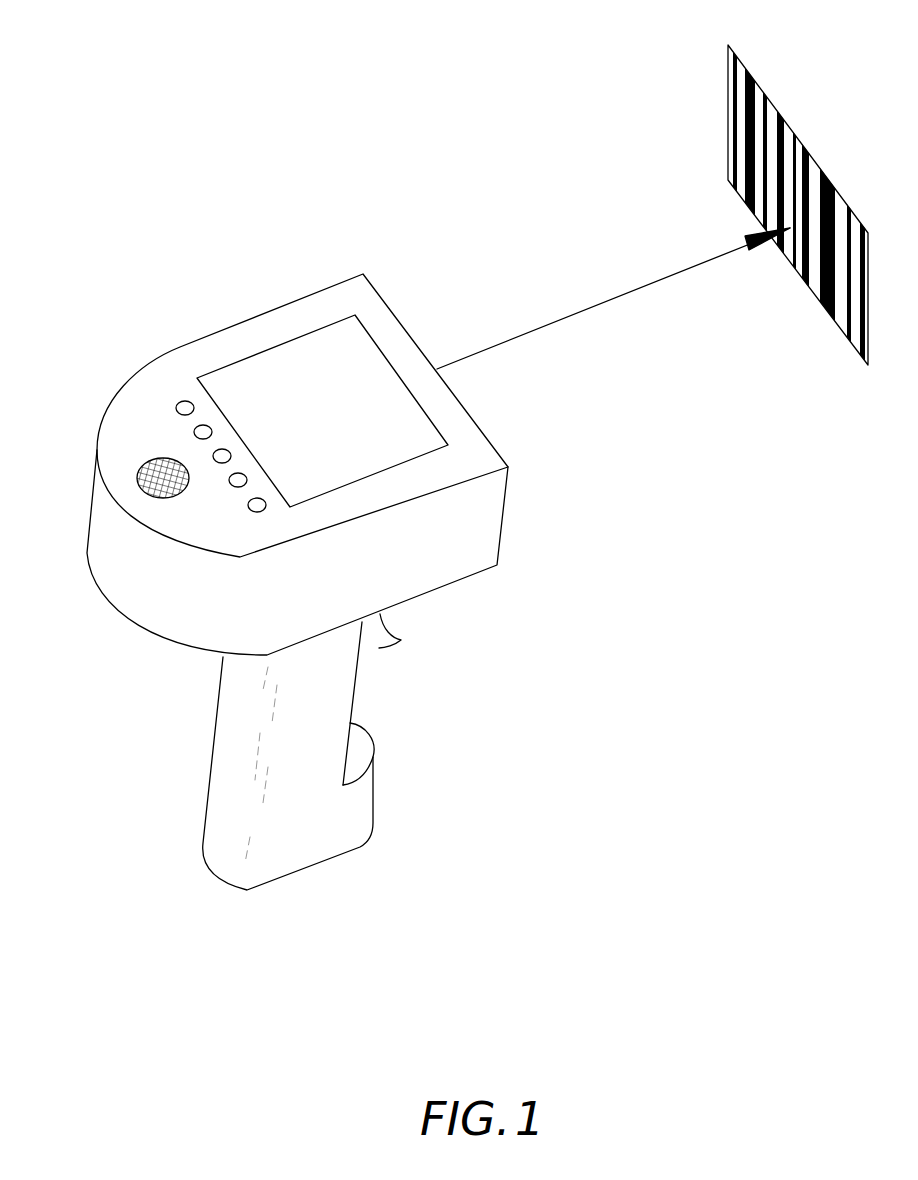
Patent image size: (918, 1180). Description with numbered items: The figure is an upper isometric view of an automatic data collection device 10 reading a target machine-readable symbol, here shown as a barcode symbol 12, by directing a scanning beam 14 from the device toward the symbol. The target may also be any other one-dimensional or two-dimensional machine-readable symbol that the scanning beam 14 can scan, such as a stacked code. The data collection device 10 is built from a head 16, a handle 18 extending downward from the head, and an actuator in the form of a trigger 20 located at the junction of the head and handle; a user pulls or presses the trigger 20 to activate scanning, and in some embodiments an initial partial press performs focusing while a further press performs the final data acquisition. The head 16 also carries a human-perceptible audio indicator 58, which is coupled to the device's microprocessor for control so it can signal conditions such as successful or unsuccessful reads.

The automatic data collection device 10 is at (201, 247).
The barcode symbol 12 is at (805, 145).
The scanning beam 14 is at (610, 298).
The head 16 is at (139, 409).
The handle 18 is at (228, 755).
The trigger 20 is at (379, 648).
The audio indicator 58 is at (143, 490).